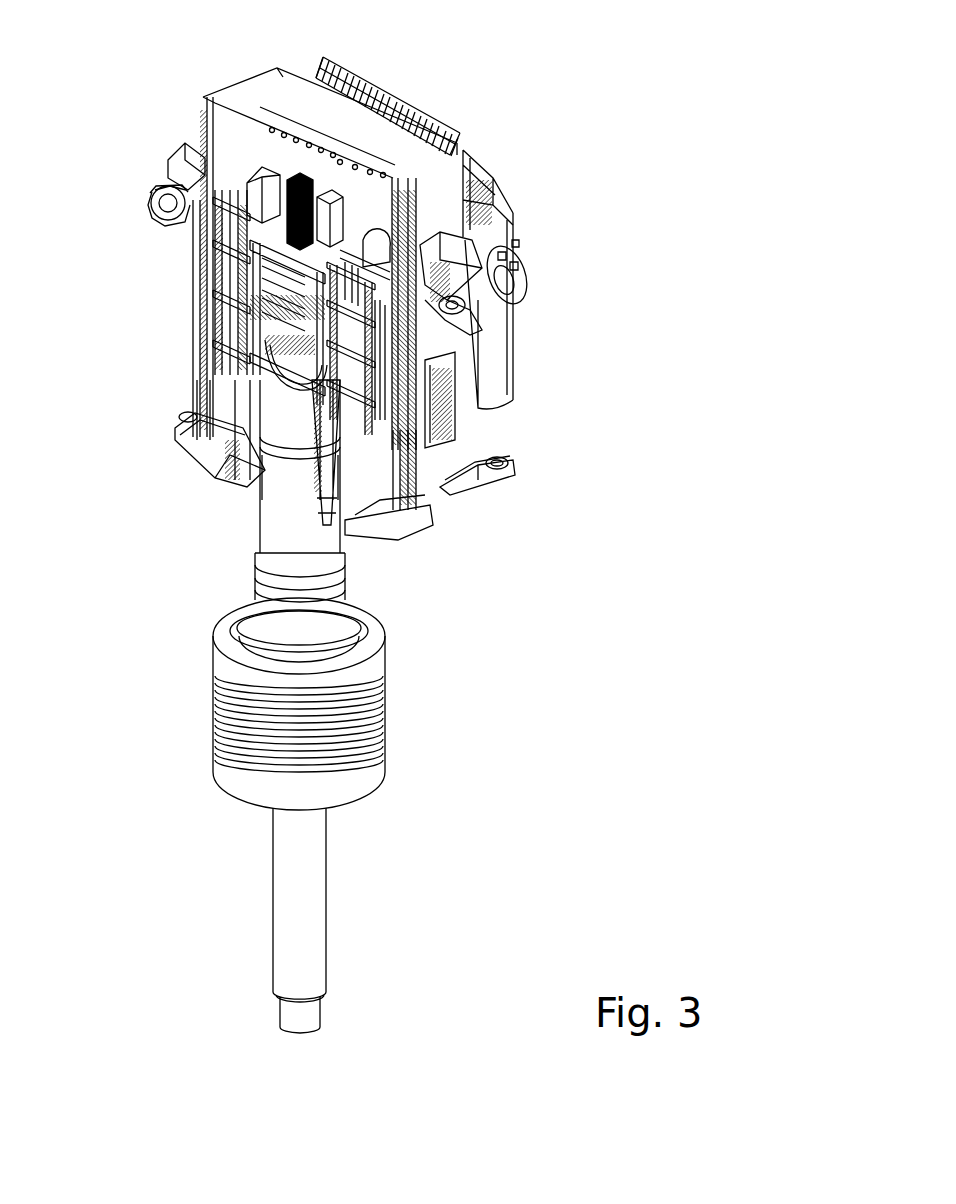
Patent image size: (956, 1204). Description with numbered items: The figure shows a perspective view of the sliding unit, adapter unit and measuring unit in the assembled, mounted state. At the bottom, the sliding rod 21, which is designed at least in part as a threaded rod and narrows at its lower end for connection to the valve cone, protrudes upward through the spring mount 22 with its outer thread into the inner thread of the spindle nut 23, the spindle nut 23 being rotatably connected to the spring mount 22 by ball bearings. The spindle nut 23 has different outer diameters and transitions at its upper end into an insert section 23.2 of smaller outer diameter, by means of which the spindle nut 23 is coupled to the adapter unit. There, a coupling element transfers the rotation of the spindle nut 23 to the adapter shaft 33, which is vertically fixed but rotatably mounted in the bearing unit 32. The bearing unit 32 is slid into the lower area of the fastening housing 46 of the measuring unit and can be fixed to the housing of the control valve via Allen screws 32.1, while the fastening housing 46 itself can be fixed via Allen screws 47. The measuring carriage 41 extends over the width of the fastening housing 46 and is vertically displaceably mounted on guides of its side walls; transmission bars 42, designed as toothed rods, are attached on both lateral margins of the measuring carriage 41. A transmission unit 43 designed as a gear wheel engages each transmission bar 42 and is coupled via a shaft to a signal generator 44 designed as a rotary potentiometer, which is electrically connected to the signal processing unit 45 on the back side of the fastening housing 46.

The sliding rod 21 is at (310, 908).
The spring mount 22 is at (404, 716).
The spindle nut 23 is at (191, 487).
The insert section 23.2 is at (290, 465).
The bearing unit 32 is at (172, 435).
The Allen screws 32.1 is at (340, 530).
The adapter shaft 33 is at (270, 168).
The measuring carriage 41 is at (280, 315).
The transmission bars 42 is at (433, 437).
The transmission unit 43 is at (468, 350).
The signal generator 44 is at (512, 287).
The signal processing unit 45 is at (516, 194).
The fastening housing 46 is at (267, 87).
The Allen screws 47 is at (513, 462).